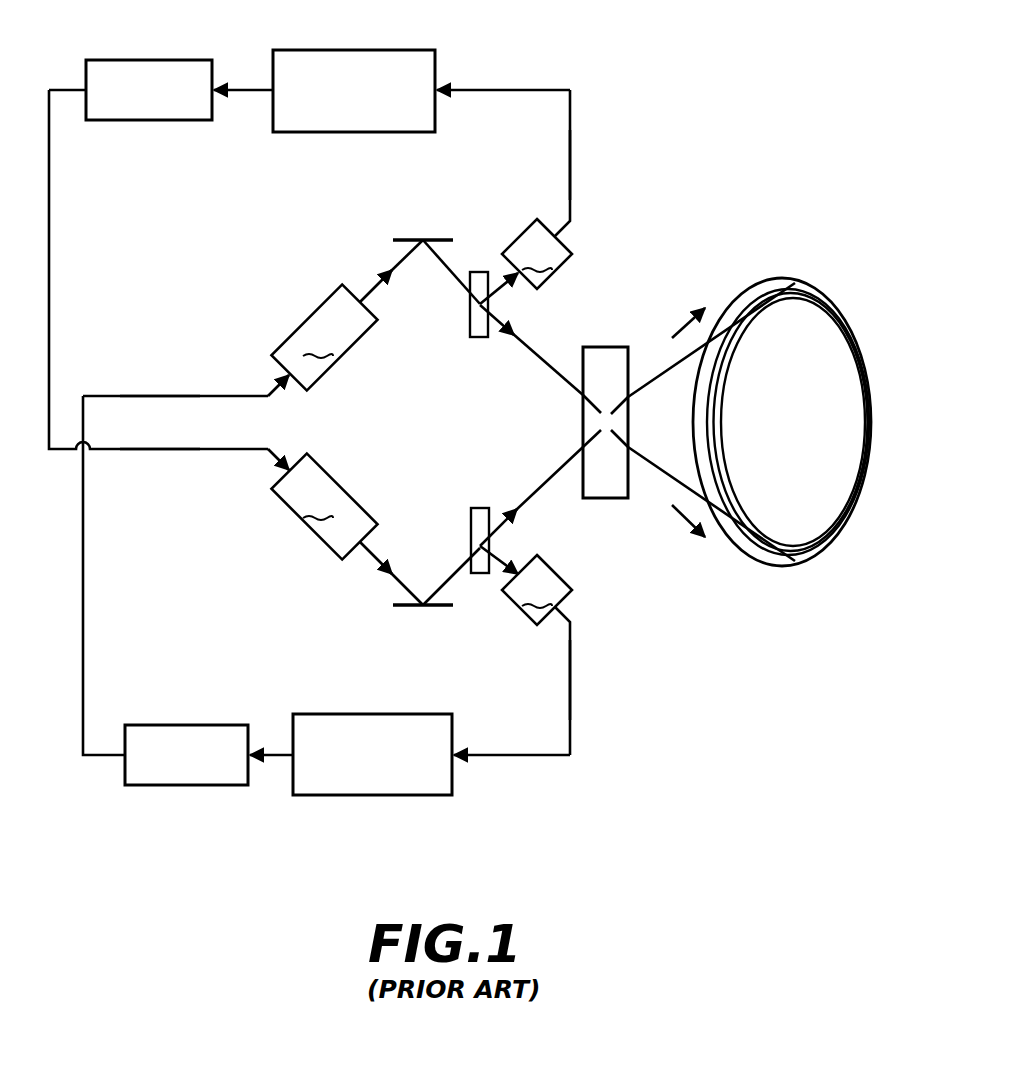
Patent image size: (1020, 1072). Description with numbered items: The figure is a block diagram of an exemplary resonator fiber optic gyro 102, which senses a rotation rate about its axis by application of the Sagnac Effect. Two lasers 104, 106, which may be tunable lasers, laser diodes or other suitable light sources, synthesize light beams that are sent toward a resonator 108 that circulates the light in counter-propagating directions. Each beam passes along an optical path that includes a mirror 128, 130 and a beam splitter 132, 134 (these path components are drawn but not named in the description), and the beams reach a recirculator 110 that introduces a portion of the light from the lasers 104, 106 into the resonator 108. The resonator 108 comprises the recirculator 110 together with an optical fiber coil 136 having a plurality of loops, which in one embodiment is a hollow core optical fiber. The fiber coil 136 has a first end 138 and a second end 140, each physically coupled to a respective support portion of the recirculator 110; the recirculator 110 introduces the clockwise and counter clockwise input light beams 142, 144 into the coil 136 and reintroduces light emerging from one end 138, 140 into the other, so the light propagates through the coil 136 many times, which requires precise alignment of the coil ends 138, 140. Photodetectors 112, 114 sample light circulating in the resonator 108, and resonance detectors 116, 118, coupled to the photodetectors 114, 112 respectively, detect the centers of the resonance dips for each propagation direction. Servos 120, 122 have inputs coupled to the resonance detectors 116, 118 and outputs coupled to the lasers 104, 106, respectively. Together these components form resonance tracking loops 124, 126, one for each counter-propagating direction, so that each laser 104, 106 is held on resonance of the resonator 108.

The resonator fiber optic gyro 102 is at (688, 218).
The laser 104 is at (324, 506).
The laser 106 is at (324, 337).
The resonator 108 is at (686, 594).
The recirculator 110 is at (460, 428).
The photodetector 112 is at (537, 590).
The photodetector 114 is at (537, 254).
The resonance detector 116 is at (325, 50).
The resonance detector 118 is at (307, 714).
The servo 120 is at (141, 60).
The servo 122 is at (175, 723).
The resonance tracking loop 124 is at (588, 120).
The resonance tracking loop 126 is at (588, 713).
The first mirror 128 is at (442, 607).
The second mirror 130 is at (416, 238).
The first beam splitter 132 is at (471, 530).
The second beam splitter 134 is at (470, 314).
The optical fiber coil 136 is at (830, 302).
The first end 138 is at (629, 398).
The second end 140 is at (629, 447).
The clockwise beam 142 is at (685, 326).
The counterclockwise beam 144 is at (685, 518).